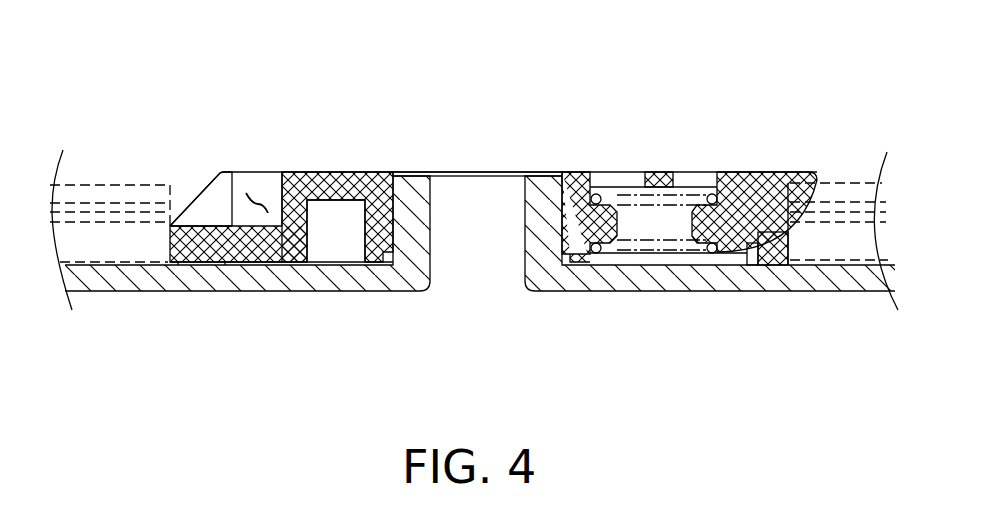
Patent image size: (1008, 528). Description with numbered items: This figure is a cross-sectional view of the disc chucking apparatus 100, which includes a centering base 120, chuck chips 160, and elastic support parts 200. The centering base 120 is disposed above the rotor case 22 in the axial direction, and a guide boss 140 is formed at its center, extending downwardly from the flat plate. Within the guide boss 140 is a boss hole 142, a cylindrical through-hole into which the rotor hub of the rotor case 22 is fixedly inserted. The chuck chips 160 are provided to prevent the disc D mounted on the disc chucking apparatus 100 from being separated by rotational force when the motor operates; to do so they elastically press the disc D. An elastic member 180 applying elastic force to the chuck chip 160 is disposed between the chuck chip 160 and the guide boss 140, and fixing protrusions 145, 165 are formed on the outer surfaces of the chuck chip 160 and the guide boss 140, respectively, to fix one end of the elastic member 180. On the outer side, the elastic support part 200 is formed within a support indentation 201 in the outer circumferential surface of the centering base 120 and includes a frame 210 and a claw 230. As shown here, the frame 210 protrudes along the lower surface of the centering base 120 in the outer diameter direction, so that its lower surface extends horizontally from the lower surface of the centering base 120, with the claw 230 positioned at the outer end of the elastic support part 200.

The disc D is at (92, 180).
The rotor case 22 is at (672, 272).
The disc chucking apparatus 100 is at (731, 167).
The centering base 120 is at (337, 222).
The guide boss 140 is at (365, 227).
The boss hole 142 is at (393, 212).
The fixing protrusion 145 is at (615, 200).
The chuck chip 160 is at (780, 195).
The fixing protrusion 165 is at (706, 193).
The elastic member 180 is at (662, 195).
The elastic support part 200 is at (234, 140).
The support indentation 201 is at (248, 193).
The frame 210 is at (250, 250).
The claw 230 is at (205, 202).